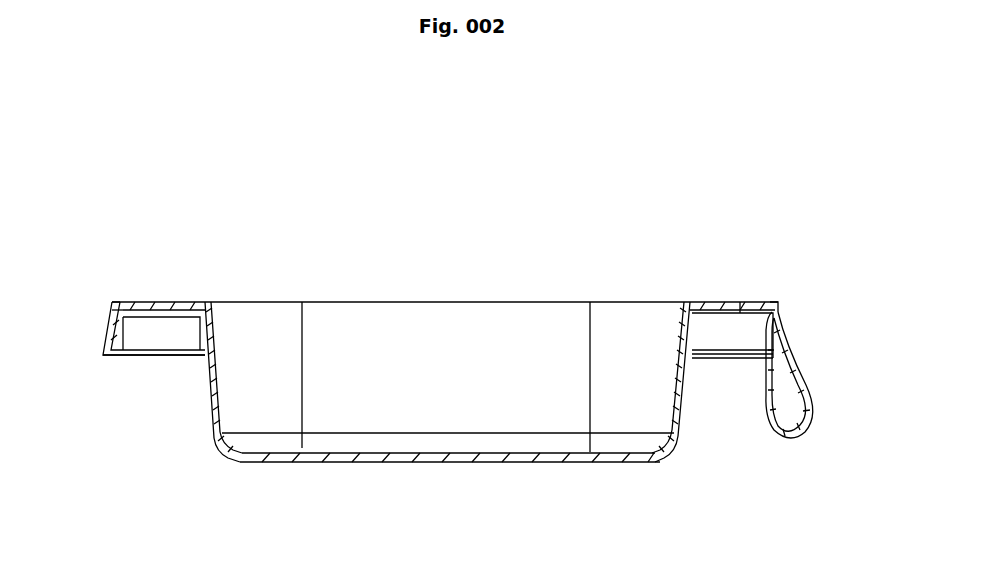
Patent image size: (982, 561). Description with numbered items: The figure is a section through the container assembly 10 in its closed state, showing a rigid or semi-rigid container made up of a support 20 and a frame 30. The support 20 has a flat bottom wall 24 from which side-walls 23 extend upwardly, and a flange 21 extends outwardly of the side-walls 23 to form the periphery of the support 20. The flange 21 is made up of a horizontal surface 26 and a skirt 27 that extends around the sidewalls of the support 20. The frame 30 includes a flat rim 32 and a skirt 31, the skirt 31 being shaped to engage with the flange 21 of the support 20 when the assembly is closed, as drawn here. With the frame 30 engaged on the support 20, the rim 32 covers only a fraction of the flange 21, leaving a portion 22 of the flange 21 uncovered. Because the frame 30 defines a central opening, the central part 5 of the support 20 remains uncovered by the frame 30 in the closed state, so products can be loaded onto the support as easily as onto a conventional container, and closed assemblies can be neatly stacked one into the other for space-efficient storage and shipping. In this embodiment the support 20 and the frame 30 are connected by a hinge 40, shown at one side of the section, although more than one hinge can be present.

The container assembly 10 is at (445, 338).
The central part 5 is at (340, 338).
The support 20 is at (356, 434).
The flange 21 is at (737, 302).
The portion 22 is at (180, 303).
The side-walls 23 is at (212, 434).
The flat bottom wall 24 is at (446, 462).
The horizontal surface 26 is at (726, 313).
The skirt 27 is at (133, 358).
The frame 30 is at (778, 301).
The skirt 31 is at (105, 337).
The flat rim 32 is at (130, 303).
The hinge 40 is at (808, 392).